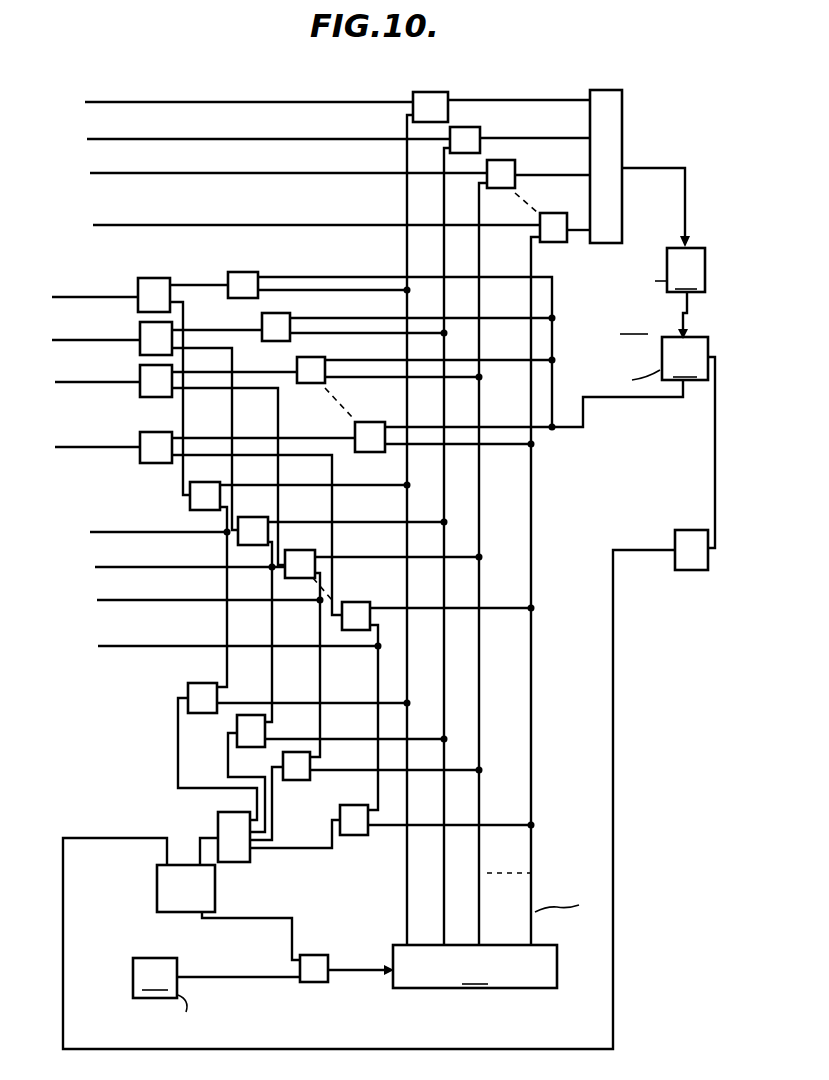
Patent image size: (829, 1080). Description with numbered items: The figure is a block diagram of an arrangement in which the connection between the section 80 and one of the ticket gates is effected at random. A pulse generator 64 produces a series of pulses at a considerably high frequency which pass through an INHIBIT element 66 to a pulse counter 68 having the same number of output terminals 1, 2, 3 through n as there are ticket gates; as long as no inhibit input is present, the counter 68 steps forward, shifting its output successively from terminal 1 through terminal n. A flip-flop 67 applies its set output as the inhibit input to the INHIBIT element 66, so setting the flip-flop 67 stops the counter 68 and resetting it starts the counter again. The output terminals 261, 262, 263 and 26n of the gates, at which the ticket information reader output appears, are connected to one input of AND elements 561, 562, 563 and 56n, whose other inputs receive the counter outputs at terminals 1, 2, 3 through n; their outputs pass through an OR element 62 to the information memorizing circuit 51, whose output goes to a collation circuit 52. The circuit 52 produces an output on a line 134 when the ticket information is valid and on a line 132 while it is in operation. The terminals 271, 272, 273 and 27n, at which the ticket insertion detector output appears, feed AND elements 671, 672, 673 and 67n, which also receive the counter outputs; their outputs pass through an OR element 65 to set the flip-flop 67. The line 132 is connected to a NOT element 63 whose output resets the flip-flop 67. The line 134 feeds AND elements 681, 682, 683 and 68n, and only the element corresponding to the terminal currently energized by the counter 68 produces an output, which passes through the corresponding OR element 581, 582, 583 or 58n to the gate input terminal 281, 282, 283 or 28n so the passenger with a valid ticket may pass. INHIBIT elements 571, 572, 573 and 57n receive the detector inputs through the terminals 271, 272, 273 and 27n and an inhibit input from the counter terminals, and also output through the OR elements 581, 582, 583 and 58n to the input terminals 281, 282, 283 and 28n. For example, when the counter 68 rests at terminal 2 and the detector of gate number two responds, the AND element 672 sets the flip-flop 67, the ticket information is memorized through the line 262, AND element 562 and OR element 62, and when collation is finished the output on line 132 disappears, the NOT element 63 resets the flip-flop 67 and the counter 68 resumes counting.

The output terminal 261 is at (214, 100).
The output terminal 262 is at (216, 138).
The output terminal 263 is at (213, 172).
The output terminal 26n is at (215, 224).
The terminal 271 is at (178, 534).
The terminal 272 is at (186, 567).
The terminal 273 is at (146, 602).
The terminal 27n is at (217, 642).
The input terminal 281 is at (130, 295).
The input terminal 282 is at (130, 336).
The input terminal 283 is at (128, 378).
The input terminal 28n is at (98, 455).
The AND element 561 is at (447, 100).
The AND element 562 is at (483, 140).
The AND element 563 is at (518, 173).
The AND element 56n is at (560, 206).
The INHIBIT element 571 is at (190, 495).
The INHIBIT element 572 is at (264, 517).
The INHIBIT element 573 is at (320, 550).
The INHIBIT element 57n is at (344, 602).
The OR element 581 is at (160, 278).
The OR element 582 is at (182, 310).
The OR element 583 is at (142, 397).
The OR element 58n is at (148, 463).
The AND element 671 is at (205, 683).
The AND element 672 is at (237, 725).
The AND element 673 is at (310, 768).
The AND element 67n is at (350, 835).
The AND element 681 is at (252, 272).
The AND element 682 is at (290, 314).
The AND element 683 is at (322, 358).
The AND element 68n is at (378, 410).
The OR element 62 is at (628, 133).
The information memorizing circuit 51 is at (631, 293).
The section 80 is at (633, 323).
The collation circuit 52 is at (640, 362).
The line 134 is at (685, 382).
The line 132 is at (714, 492).
The NOT element 63 is at (676, 540).
The pulse generator 64 is at (210, 1003).
The OR element 65 is at (245, 862).
The INHIBIT element 66 is at (305, 982).
The flip-flop 67 is at (215, 888).
The pulse counter 68 is at (475, 979).
The output terminal 1 is at (406, 913).
The output terminal 2 is at (444, 912).
The output terminal 3 is at (479, 912).